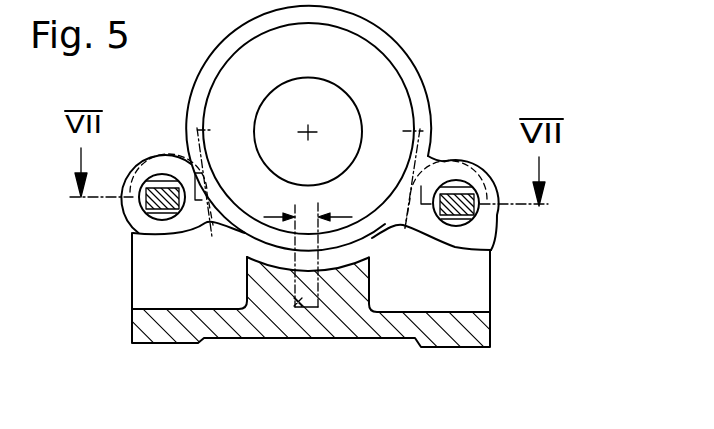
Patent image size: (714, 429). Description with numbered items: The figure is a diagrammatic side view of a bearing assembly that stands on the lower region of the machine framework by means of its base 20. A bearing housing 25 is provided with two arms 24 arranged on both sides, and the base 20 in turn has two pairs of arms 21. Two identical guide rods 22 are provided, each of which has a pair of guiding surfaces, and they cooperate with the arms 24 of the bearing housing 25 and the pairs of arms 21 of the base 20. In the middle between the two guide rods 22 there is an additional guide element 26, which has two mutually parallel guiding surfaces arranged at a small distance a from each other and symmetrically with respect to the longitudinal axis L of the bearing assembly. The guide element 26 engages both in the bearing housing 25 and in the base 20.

The base 20 is at (388, 326).
The pair of arms 21 is at (140, 233).
The guide rod 22 is at (161, 223).
The arm 24 is at (143, 238).
The bearing housing 25 is at (403, 58).
The guide element 26 is at (298, 302).
The distance a is at (312, 215).
The longitudinal axis L is at (306, 134).